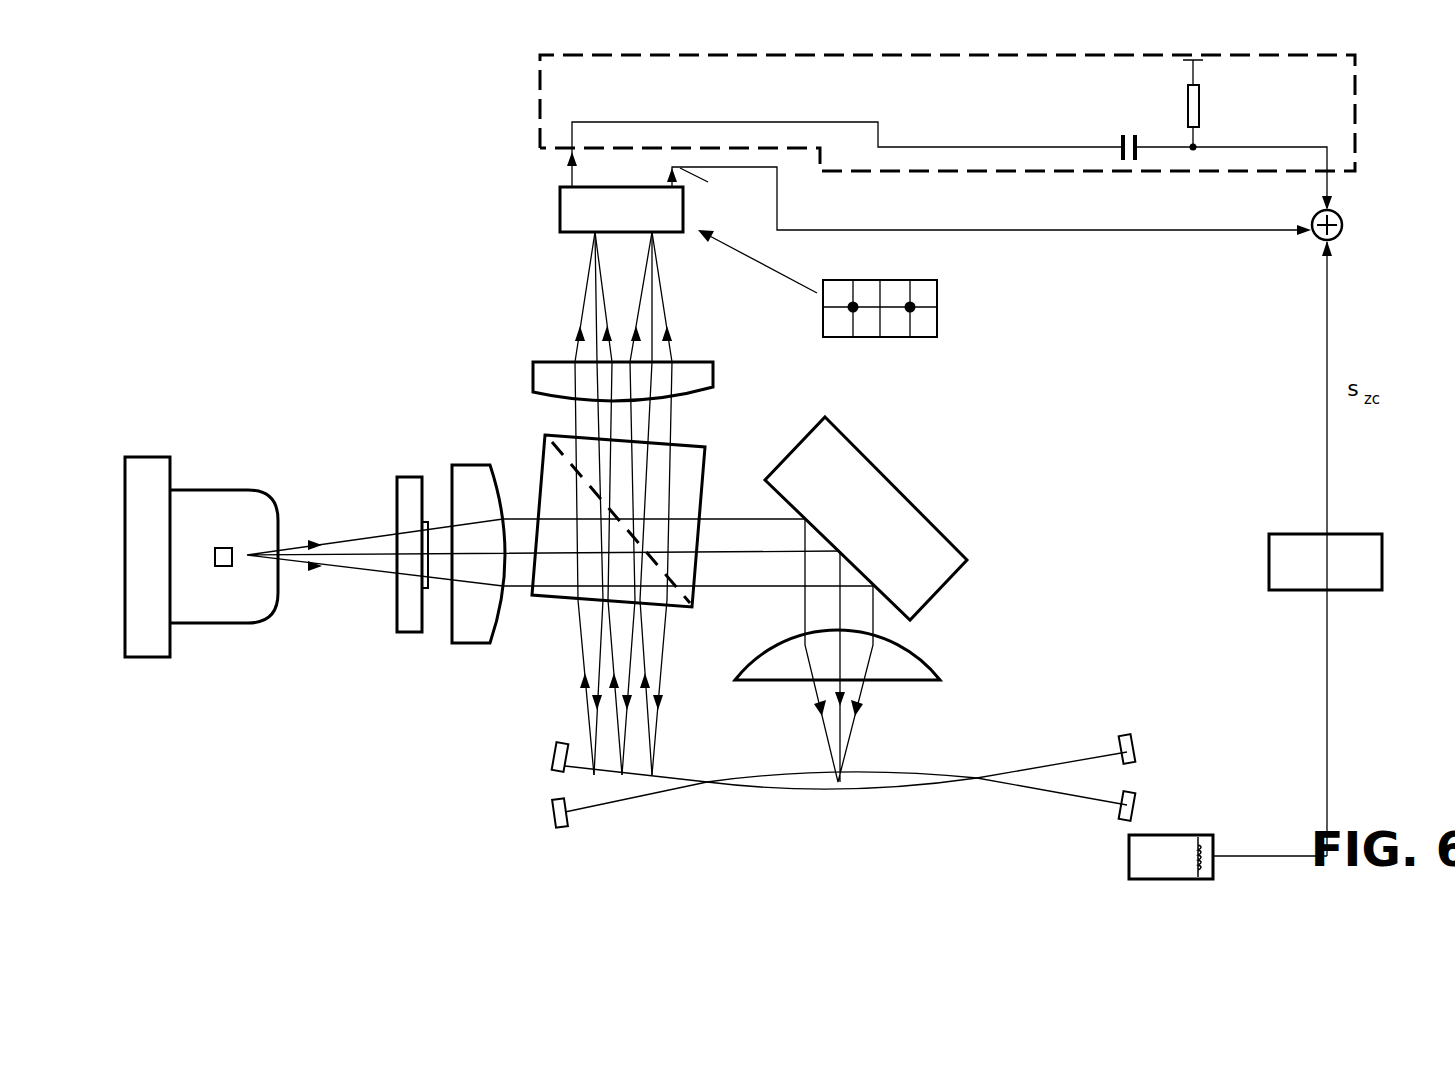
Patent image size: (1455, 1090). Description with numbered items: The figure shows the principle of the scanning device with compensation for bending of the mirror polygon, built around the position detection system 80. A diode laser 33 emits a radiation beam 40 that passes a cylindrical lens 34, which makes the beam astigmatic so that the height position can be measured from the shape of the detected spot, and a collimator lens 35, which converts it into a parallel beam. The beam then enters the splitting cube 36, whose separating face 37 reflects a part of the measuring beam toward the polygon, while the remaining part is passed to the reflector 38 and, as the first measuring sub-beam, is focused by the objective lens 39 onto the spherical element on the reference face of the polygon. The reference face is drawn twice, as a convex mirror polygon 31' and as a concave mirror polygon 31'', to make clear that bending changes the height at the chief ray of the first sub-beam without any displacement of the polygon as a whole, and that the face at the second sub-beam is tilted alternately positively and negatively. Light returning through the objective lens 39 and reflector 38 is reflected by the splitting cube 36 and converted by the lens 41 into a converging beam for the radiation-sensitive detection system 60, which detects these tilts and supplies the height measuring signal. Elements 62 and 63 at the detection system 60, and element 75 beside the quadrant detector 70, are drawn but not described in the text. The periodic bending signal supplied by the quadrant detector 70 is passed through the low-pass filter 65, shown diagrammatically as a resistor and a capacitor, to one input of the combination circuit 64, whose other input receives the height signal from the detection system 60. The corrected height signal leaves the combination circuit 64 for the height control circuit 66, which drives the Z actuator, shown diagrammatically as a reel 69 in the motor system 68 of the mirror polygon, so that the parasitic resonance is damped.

The position detection system 80 is at (372, 288).
The low-pass filter 65 is at (540, 93).
The radiation-sensitive detection system 60 is at (560, 210).
The first detector element 62 is at (593, 233).
The second detector element 63 is at (653, 233).
The quadrant detector 70 is at (814, 270).
The second detector diode 75 is at (909, 270).
The combination circuit 64 is at (1343, 229).
The height control circuit 66 is at (1269, 563).
The motor system 68 is at (1157, 835).
The reel 69 is at (1199, 835).
The lens 41 is at (715, 376).
The splitting cube 36 is at (540, 608).
The separating face 37 is at (527, 455).
The reflector 38 is at (917, 508).
The objective lens 39 is at (942, 672).
The diode laser 33 is at (215, 490).
The radiation beam 40 is at (350, 548).
The cylindrical lens 34 is at (410, 633).
The collimator lens 35 is at (475, 644).
The convex mirror polygon 31' is at (843, 771).
The concave mirror polygon 31'' is at (844, 793).